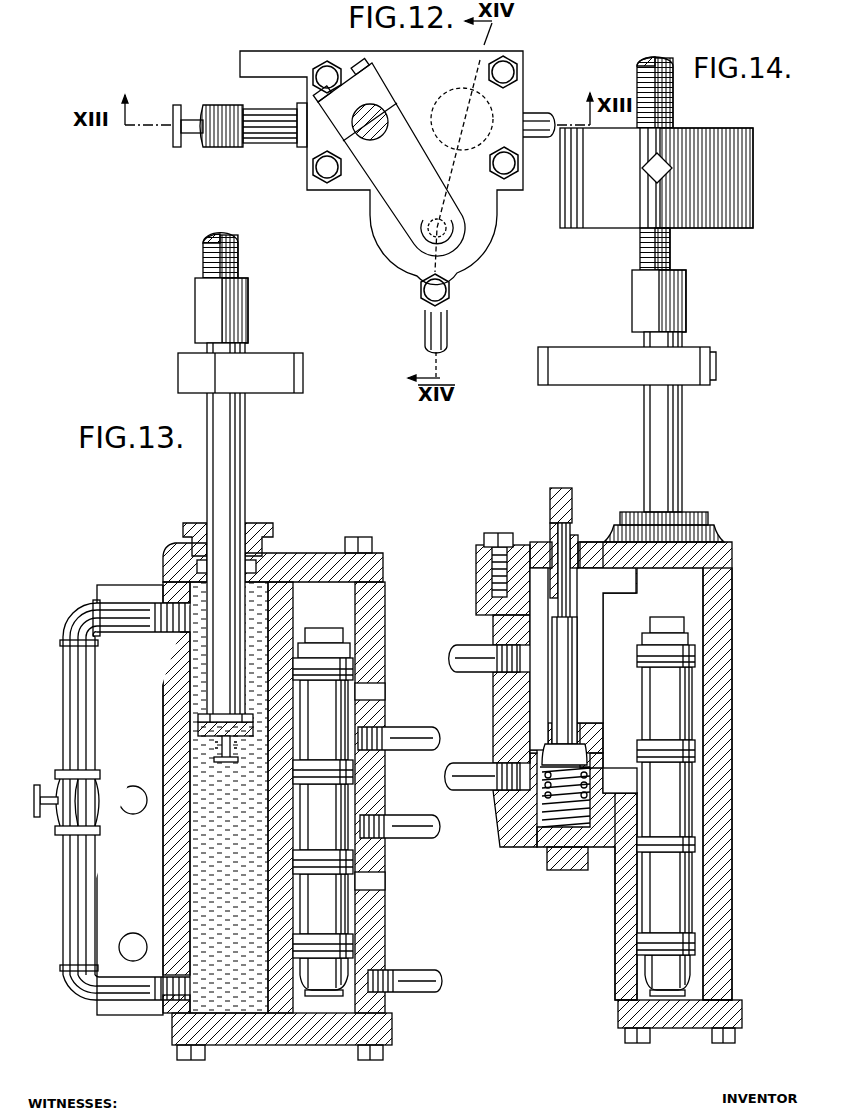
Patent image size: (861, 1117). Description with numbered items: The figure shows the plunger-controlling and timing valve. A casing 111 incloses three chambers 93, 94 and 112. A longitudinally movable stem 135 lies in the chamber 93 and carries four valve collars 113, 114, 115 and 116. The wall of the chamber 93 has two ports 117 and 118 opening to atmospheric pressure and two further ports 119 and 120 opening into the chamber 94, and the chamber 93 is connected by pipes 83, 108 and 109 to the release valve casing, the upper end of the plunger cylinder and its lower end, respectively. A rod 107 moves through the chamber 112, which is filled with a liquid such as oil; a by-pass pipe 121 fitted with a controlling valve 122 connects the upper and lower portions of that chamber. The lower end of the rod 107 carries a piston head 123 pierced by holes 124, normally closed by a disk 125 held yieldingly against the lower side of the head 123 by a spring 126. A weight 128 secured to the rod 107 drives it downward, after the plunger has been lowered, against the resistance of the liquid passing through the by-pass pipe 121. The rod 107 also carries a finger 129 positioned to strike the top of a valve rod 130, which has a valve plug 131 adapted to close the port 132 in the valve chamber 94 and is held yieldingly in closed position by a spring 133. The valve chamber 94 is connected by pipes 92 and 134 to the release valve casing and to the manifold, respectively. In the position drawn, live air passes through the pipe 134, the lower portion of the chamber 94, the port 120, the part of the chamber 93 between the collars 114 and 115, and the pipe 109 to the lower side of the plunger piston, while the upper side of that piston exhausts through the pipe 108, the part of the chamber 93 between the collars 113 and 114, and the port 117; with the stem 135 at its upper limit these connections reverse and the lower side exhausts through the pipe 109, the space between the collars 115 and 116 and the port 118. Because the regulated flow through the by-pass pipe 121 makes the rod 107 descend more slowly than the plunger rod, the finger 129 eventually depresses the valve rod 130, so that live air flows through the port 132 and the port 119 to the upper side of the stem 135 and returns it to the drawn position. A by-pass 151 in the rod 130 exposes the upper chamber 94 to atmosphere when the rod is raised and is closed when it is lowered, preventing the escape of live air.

In FIG. 13, the pipe 83 is at (437, 992).
In FIG. 14, the pipe 92 is at (465, 645).
In FIG. 13, the chamber 93 is at (360, 923).
In FIG. 14, the chamber 93 is at (694, 685).
In FIG. 14, the valve chamber 94 is at (501, 533).
In FIG. 13, the rod 107 is at (245, 443).
In FIG. 14, the rod 107 is at (682, 439).
In FIG. 13, the pipe 108 is at (404, 735).
In FIG. 13, the pipe 109 is at (422, 838).
In FIG. 14, the casing 111 is at (733, 877).
In FIG. 13, the chamber 112 is at (249, 995).
In FIG. 13, the valve collar 113 is at (352, 662).
In FIG. 14, the valve collar 113 is at (698, 650).
In FIG. 13, the valve collar 114 is at (356, 770).
In FIG. 14, the valve collar 114 is at (698, 755).
In FIG. 13, the valve collar 115 is at (356, 864).
In FIG. 14, the valve collar 115 is at (698, 845).
In FIG. 13, the valve collar 116 is at (356, 958).
In FIG. 14, the valve collar 116 is at (698, 945).
In FIG. 13, the port 117 is at (372, 690).
In FIG. 13, the port 118 is at (380, 880).
In FIG. 14, the port 119 is at (612, 580).
In FIG. 14, the port 120 is at (606, 852).
In FIG. 13, the by-pass pipe 121 is at (78, 911).
In FIG. 12, the controlling valve 122 is at (222, 150).
In FIG. 13, the controlling valve 122 is at (70, 815).
In FIG. 13, the piston head 123 is at (198, 729).
In FIG. 13, the holes 124 is at (200, 718).
In FIG. 13, the disk 125 is at (220, 742).
In FIG. 13, the spring 126 is at (218, 755).
In FIG. 14, the weight 128 is at (749, 205).
In FIG. 12, the finger 129 is at (403, 206).
In FIG. 13, the finger 129 is at (303, 378).
In FIG. 14, the finger 129 is at (585, 352).
In FIG. 14, the valve rod 130 is at (561, 488).
In FIG. 14, the valve plug 131 is at (543, 750).
In FIG. 14, the port 132 is at (550, 732).
In FIG. 14, the spring 133 is at (531, 857).
In FIG. 14, the pipe 134 is at (483, 791).
In FIG. 13, the stem 135 is at (345, 930).
In FIG. 14, the stem 135 is at (700, 790).
In FIG. 14, the by-pass 151 is at (574, 535).